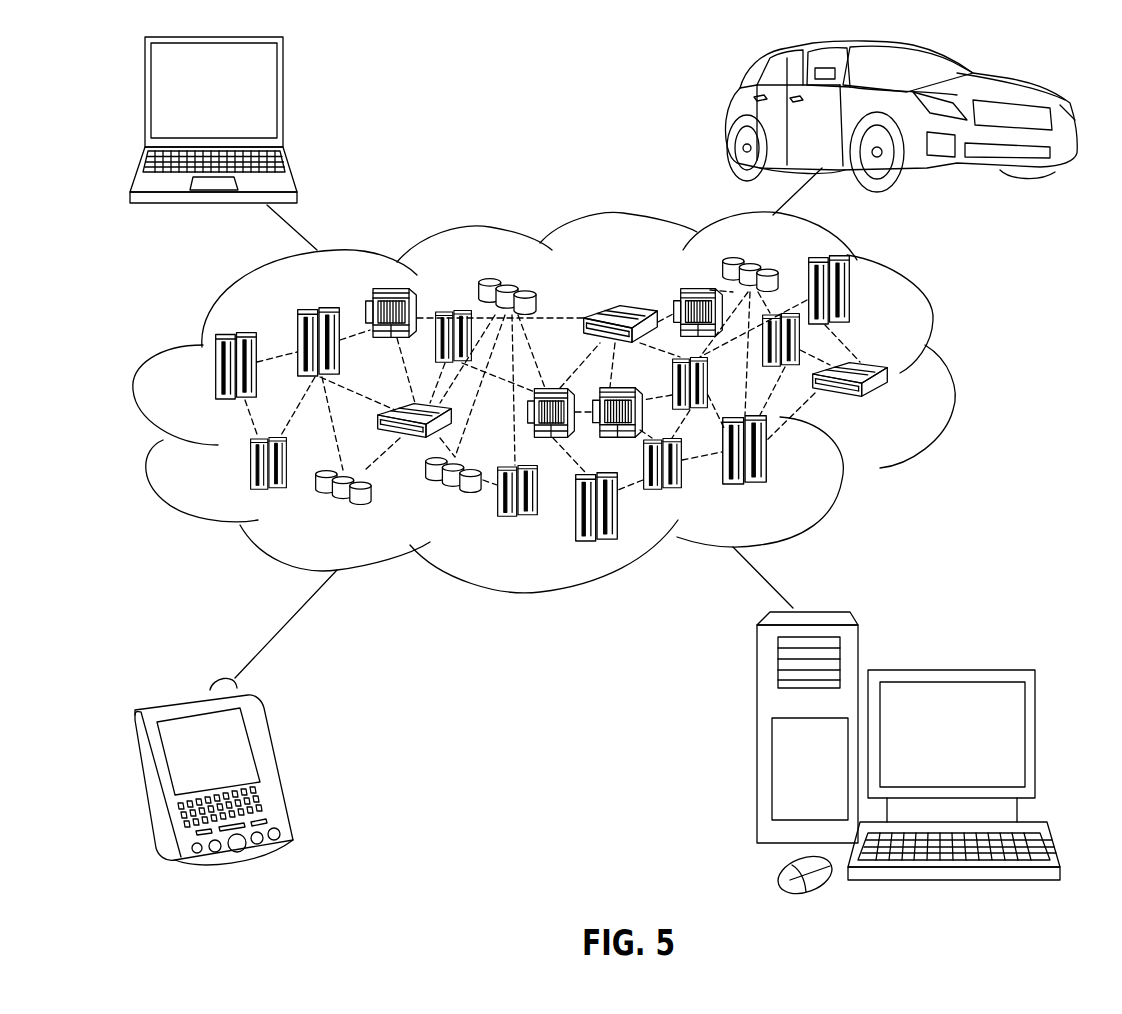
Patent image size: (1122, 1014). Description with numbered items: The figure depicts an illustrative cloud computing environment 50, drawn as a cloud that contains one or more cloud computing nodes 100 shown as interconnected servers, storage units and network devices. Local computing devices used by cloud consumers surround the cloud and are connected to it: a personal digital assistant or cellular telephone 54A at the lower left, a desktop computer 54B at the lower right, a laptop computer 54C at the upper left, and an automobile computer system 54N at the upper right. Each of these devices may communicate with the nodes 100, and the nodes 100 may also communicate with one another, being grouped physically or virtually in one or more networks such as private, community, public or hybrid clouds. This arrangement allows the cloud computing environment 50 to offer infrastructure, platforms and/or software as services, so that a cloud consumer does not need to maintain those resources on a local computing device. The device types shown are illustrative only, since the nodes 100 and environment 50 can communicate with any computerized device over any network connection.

The cloud computing environment 50 is at (952, 377).
The cloud computing nodes 100 is at (897, 409).
The personal digital assistant or cellular telephone 54A is at (274, 763).
The desktop computer 54B is at (948, 670).
The laptop computer 54C is at (292, 95).
The automobile computer system 54N is at (727, 117).